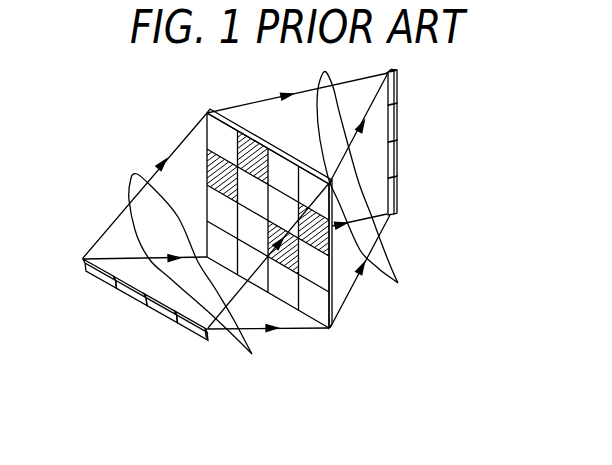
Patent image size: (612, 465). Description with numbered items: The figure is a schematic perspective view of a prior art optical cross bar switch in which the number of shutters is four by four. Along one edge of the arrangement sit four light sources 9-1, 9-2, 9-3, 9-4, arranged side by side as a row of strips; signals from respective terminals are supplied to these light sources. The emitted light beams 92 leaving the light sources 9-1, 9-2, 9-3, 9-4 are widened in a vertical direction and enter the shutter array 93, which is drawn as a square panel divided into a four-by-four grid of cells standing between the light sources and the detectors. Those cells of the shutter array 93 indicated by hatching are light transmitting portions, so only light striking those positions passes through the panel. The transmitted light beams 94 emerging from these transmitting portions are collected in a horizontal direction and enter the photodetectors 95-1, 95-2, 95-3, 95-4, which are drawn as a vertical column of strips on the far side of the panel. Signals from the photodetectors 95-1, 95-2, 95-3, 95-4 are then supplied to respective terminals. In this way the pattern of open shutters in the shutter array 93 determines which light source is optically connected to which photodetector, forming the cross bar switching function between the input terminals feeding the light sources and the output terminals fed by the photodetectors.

The light source 9-1 is at (88, 268).
The light source 9-2 is at (123, 288).
The light source 9-3 is at (157, 312).
The light source 9-4 is at (192, 327).
The emitted light beams 92 is at (204, 280).
The shutter array 93 is at (322, 306).
The transmitted light beams 94 is at (371, 193).
The photodetector 95-1 is at (398, 90).
The photodetector 95-2 is at (398, 129).
The photodetector 95-3 is at (398, 166).
The photodetector 95-4 is at (398, 200).